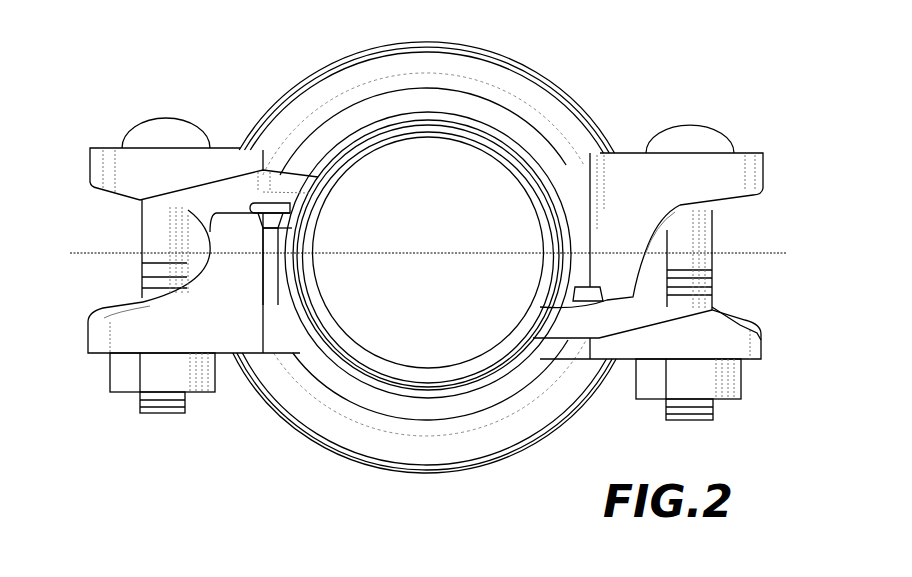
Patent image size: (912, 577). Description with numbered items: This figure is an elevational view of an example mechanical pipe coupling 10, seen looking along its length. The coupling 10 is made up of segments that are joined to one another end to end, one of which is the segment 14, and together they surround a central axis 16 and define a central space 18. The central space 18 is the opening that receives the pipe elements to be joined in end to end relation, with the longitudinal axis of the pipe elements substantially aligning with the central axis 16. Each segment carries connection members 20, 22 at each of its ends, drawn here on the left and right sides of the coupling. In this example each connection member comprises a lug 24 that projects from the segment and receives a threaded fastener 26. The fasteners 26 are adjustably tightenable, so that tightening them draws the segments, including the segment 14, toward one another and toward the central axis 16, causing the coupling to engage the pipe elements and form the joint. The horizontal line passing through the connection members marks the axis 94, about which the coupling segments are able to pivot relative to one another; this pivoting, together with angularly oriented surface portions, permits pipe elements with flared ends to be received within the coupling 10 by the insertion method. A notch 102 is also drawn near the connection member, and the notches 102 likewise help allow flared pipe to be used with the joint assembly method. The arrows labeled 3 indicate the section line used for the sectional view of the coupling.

The section line for FIG. 3 is at (398, 18).
The coupling 10 is at (419, 271).
The segment 14 is at (403, 470).
The central axis 16 is at (423, 257).
The central space 18 is at (443, 300).
The connection member 20 is at (89, 168).
The connection member 22 is at (764, 172).
The lug 24 is at (213, 152).
The threaded fastener 26 is at (143, 238).
The axis 94 is at (784, 253).
The notch 102 is at (291, 230).